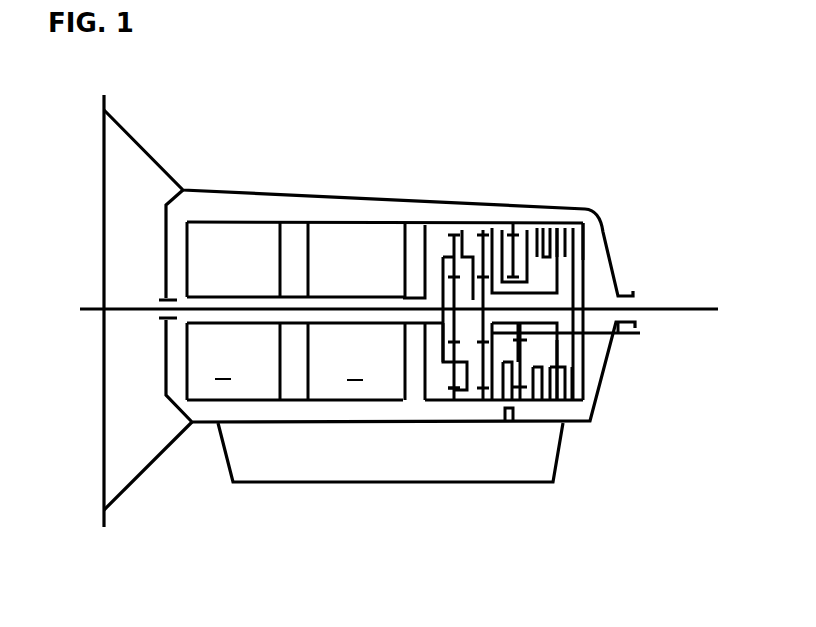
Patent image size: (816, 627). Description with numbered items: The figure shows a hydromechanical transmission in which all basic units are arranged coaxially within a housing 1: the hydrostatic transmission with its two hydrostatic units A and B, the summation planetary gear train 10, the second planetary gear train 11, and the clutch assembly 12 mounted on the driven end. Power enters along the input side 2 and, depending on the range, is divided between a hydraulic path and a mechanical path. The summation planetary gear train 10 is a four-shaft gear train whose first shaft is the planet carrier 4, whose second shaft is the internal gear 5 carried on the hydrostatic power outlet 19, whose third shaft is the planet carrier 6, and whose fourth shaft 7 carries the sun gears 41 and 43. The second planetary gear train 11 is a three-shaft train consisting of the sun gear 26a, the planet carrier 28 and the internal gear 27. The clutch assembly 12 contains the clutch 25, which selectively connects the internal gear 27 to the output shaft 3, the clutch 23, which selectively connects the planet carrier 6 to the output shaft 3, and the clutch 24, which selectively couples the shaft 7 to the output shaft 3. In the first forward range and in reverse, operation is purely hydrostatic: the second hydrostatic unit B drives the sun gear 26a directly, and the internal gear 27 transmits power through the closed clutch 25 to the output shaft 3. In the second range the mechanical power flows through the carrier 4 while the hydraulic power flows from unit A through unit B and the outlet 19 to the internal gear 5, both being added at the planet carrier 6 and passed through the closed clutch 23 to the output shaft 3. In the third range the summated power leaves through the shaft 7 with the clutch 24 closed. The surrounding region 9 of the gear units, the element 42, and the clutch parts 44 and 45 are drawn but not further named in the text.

The transmission housing 1 is at (225, 190).
The input shaft 2 is at (93, 306).
The output shaft 3 is at (652, 313).
The planet carrier 4 is at (440, 277).
The internal gear 5 is at (482, 230).
The planet carrier 6 is at (492, 228).
The fourth shaft 7 is at (532, 310).
The gear unit 9 is at (293, 176).
The summation planetary gear train 10 is at (450, 186).
The second planetary gear train 11 is at (529, 196).
The clutch assembly 12 is at (598, 180).
The hydrostatic power outlet 19 is at (418, 325).
The clutch 23 is at (584, 210).
The clutch 24 is at (585, 226).
The clutch 25 is at (535, 222).
The sun gear 26a is at (640, 333).
The internal gear 27 is at (512, 408).
The planet carrier 28 is at (503, 400).
The sun gear 41 is at (448, 322).
The clutch rod 42 is at (454, 400).
The sun gear 43 is at (455, 380).
The clutch plates 44 is at (583, 355).
The clutch cylinder 45 is at (560, 357).